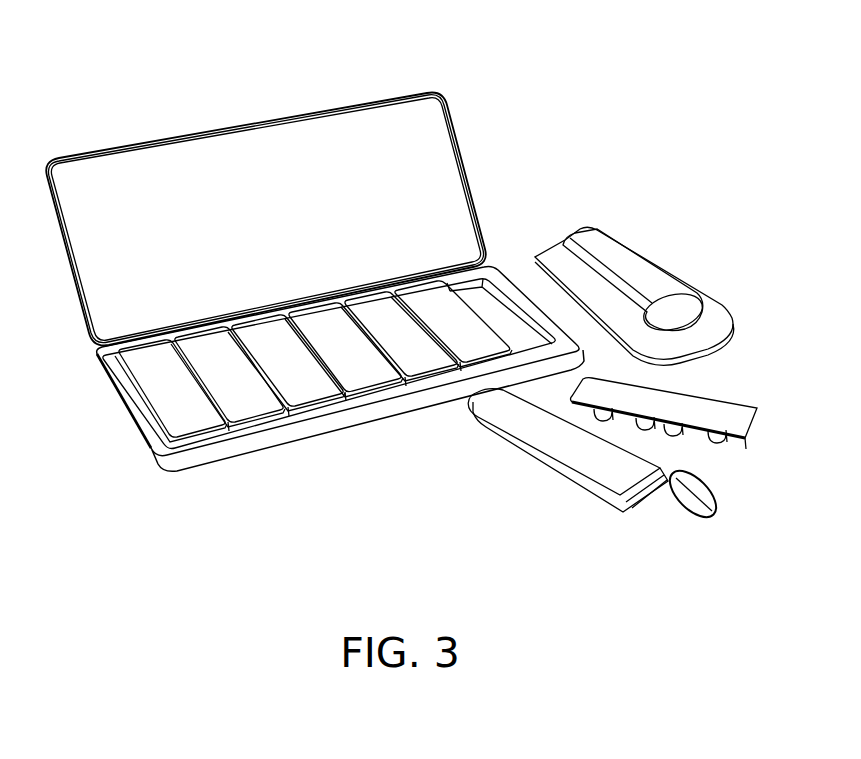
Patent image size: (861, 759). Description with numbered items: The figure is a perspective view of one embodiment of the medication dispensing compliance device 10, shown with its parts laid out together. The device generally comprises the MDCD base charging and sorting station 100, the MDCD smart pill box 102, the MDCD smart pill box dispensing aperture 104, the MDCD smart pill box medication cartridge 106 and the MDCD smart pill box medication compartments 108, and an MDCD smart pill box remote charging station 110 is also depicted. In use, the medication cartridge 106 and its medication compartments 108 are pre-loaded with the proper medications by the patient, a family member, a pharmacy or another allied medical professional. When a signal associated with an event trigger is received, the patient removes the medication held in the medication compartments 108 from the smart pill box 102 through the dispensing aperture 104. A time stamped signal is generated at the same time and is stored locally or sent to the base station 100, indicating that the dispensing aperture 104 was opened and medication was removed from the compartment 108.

The medication dispensing compliance device (MDCD) 10 is at (262, 84).
The MDCD base charging and sorting station 100 is at (168, 451).
The MDCD smart pill box 102 is at (144, 369).
The MDCD smart pill box dispensing aperture 104 is at (580, 478).
The MDCD smart pill box medication cartridge 106 is at (701, 515).
The MDCD smart pill box medication compartments 108 is at (757, 418).
The MDCD smart pill box remote charging station 110 is at (710, 308).